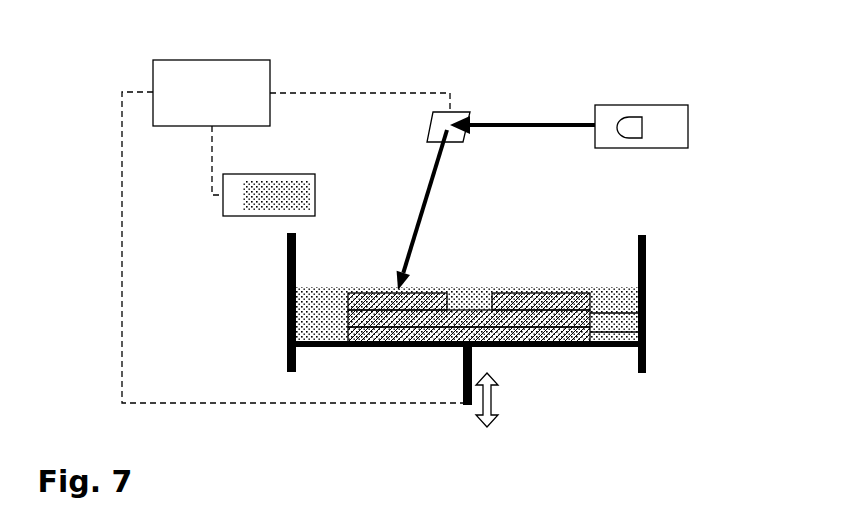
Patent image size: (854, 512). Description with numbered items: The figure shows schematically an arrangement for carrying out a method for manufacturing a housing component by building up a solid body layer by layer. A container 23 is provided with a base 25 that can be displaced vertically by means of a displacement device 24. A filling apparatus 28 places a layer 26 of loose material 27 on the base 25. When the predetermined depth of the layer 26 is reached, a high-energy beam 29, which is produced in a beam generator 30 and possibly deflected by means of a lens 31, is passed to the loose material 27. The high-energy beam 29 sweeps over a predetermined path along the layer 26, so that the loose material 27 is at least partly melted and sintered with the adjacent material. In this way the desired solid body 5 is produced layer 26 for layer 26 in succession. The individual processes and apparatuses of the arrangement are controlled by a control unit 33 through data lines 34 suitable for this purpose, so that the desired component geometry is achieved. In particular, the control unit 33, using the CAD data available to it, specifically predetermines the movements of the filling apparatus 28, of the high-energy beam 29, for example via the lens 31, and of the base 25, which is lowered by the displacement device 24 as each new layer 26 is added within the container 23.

The solid body 5 is at (532, 295).
The container 23 is at (646, 258).
The displacement device 24 is at (463, 386).
The base 25 is at (606, 348).
The layer 26 is at (645, 313).
The loose material 27 is at (600, 293).
The filling apparatus 28 is at (233, 208).
The high-energy beam 29 is at (415, 227).
The beam generator 30 is at (670, 118).
The lens 31 is at (462, 112).
The control unit 33 is at (218, 80).
The data lines 34 is at (120, 172).